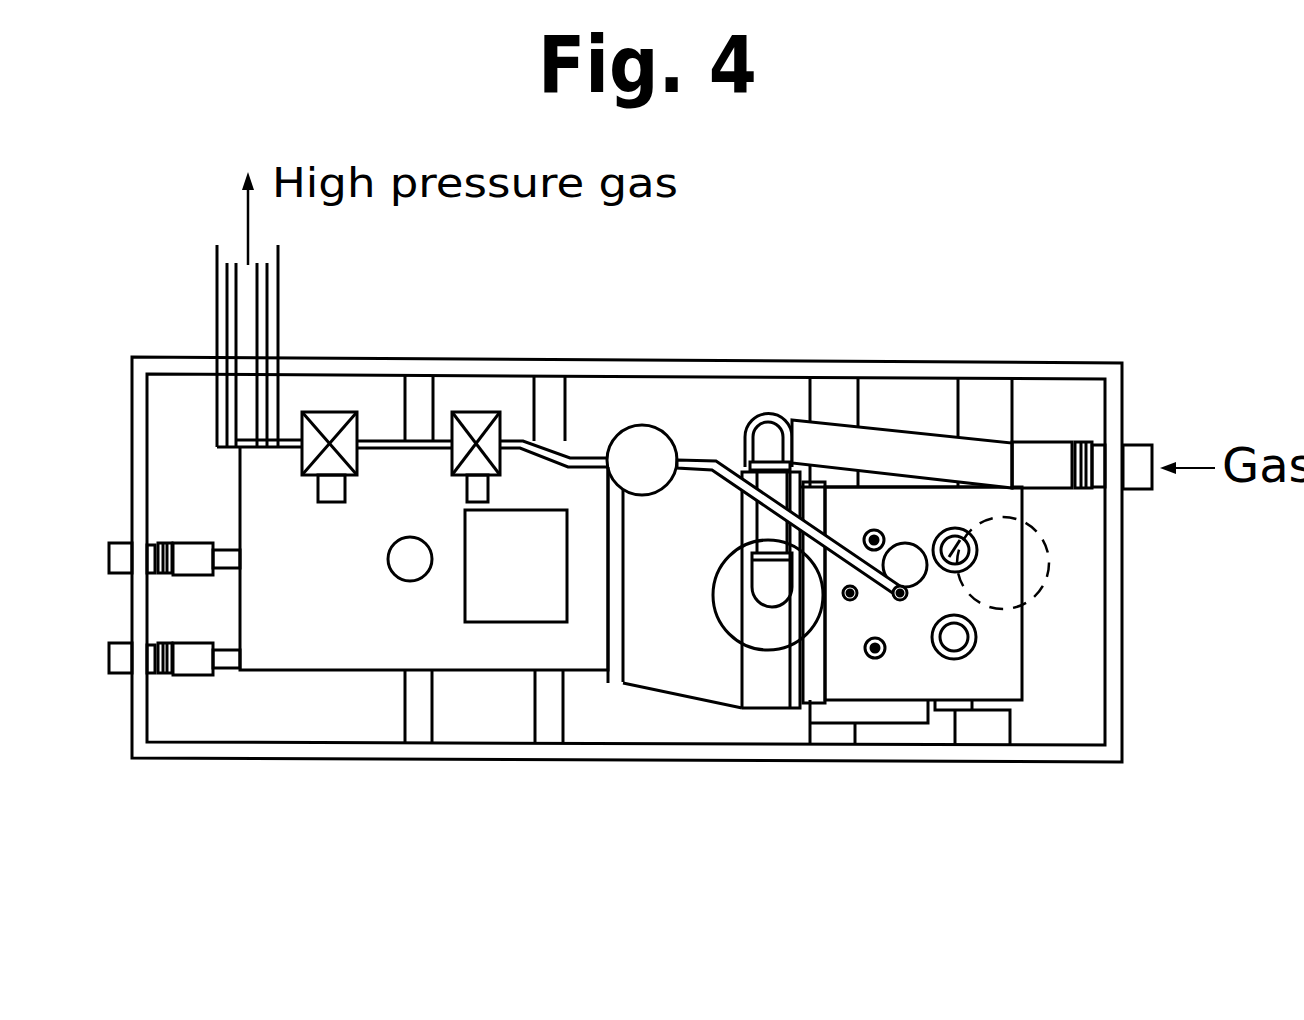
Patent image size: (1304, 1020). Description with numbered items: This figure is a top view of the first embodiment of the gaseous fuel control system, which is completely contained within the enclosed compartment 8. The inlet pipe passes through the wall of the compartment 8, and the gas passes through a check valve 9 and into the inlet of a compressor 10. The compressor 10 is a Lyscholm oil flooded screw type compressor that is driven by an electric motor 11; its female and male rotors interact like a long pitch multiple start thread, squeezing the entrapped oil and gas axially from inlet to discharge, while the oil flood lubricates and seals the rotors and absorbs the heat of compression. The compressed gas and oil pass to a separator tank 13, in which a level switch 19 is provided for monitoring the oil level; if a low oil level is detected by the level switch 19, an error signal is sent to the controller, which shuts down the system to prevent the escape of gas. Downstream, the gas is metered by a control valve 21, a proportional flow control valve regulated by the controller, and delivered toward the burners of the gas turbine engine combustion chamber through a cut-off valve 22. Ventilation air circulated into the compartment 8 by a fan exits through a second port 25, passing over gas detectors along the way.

The compartment 8 is at (1112, 375).
The check valve 9 is at (730, 622).
The compressor 10 is at (770, 693).
The electric motor 11 is at (395, 655).
The separator tank 13 is at (912, 683).
The level switch 19 is at (648, 432).
The control valve 21 is at (482, 418).
The cut-off valve 22 is at (333, 417).
The second port 25 is at (1047, 558).